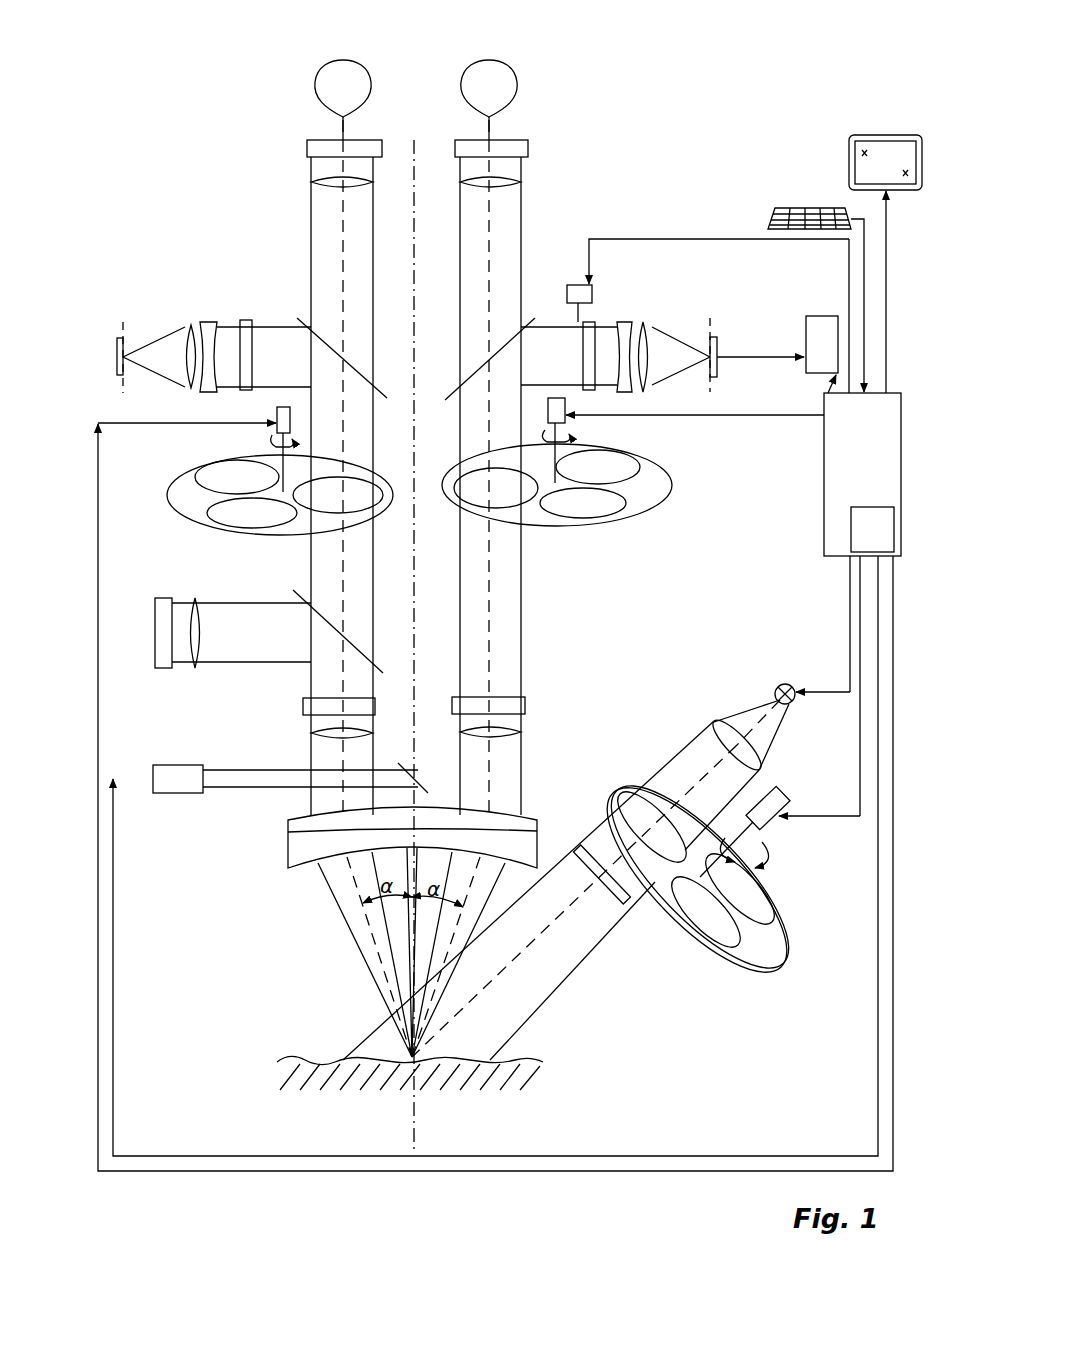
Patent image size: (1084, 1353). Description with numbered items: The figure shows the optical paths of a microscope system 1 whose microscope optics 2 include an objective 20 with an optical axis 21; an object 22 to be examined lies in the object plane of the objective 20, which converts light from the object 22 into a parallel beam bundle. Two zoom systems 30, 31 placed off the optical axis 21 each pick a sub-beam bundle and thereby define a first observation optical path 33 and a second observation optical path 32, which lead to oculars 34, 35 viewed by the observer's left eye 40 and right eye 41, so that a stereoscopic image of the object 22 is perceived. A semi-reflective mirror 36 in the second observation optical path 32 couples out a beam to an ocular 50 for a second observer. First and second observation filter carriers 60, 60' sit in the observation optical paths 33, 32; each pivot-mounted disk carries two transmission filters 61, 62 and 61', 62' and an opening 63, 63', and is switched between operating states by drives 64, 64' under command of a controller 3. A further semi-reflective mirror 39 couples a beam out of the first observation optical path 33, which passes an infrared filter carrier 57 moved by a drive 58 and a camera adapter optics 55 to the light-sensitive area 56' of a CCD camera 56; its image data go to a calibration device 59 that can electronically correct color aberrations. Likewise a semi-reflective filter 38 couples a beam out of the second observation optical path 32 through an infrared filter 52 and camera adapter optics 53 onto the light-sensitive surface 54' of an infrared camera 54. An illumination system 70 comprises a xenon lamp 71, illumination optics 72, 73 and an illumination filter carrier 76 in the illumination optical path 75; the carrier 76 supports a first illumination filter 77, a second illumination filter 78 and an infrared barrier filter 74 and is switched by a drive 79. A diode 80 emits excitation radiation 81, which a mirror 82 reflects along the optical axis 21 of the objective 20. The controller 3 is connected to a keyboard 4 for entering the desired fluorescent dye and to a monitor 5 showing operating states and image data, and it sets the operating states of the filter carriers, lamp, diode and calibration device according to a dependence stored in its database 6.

The microscope system 1 is at (692, 110).
The microscope optics 2 is at (178, 177).
The controller 3 is at (873, 498).
The keyboard 4 is at (809, 204).
The monitor 5 is at (886, 133).
The database 6 is at (880, 549).
The objective 20 is at (288, 840).
The optical axis 21 is at (415, 1110).
The object 22 is at (290, 1057).
The zoom system 30 is at (297, 695).
The zoom system 31 is at (530, 693).
The second observation optical path 32 is at (311, 233).
The first observation optical path 33 is at (521, 222).
The ocular 34 is at (300, 140).
The ocular 35 is at (540, 140).
The semi-reflective mirror 36 is at (302, 593).
The semi-reflective filter 38 is at (297, 318).
The semi-reflective mirror 39 is at (533, 318).
The left eye 40 is at (337, 60).
The right eye 41 is at (478, 57).
The ocular 50 is at (204, 675).
The infrared filter 52 is at (250, 320).
The camera adapter optics 53 is at (220, 307).
The infrared camera 54 is at (121, 357).
The light-sensitive surface 54' is at (96, 341).
The camera adapter optics 55 is at (656, 320).
The CCD camera 56 is at (757, 340).
The light-sensitive area 56' is at (744, 366).
The infrared filter carrier 57 is at (593, 322).
The drive 58 is at (570, 302).
The calibration device 59 is at (834, 356).
The first observation filter carrier 60 is at (587, 474).
The second observation filter carrier 60' is at (251, 484).
The transmission filter 61 is at (478, 508).
The transmission filter 61' is at (353, 513).
The transmission filter 62 is at (583, 524).
The transmission filter 62' is at (242, 532).
The opening 63 is at (607, 455).
The opening 63' is at (223, 464).
The drive 64 is at (683, 417).
The drive 64' is at (196, 418).
The illumination system 70 is at (806, 743).
The xenon lamp 71 is at (775, 693).
The illumination optics 72 is at (717, 722).
The illumination optics 73 is at (613, 893).
The infrared barrier filter 74 is at (693, 930).
The illumination optical path 75 is at (528, 952).
The illumination filter carrier 76 is at (747, 953).
The first illumination filter 77 is at (613, 813).
The second illumination filter 78 is at (760, 907).
The drive 79 is at (783, 787).
The diode 80 is at (177, 763).
The excitation radiation 81 is at (237, 770).
The mirror 82 is at (419, 780).